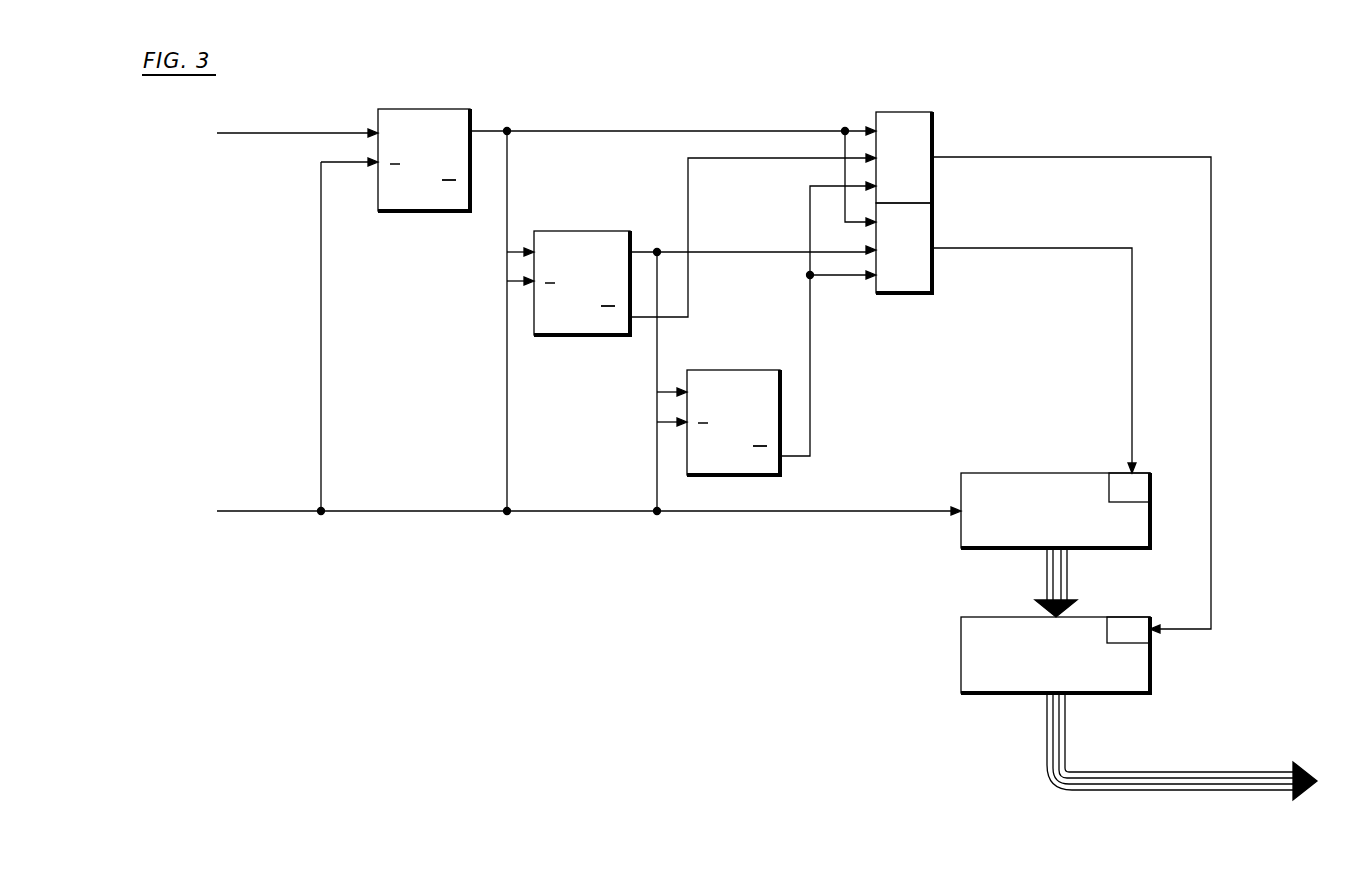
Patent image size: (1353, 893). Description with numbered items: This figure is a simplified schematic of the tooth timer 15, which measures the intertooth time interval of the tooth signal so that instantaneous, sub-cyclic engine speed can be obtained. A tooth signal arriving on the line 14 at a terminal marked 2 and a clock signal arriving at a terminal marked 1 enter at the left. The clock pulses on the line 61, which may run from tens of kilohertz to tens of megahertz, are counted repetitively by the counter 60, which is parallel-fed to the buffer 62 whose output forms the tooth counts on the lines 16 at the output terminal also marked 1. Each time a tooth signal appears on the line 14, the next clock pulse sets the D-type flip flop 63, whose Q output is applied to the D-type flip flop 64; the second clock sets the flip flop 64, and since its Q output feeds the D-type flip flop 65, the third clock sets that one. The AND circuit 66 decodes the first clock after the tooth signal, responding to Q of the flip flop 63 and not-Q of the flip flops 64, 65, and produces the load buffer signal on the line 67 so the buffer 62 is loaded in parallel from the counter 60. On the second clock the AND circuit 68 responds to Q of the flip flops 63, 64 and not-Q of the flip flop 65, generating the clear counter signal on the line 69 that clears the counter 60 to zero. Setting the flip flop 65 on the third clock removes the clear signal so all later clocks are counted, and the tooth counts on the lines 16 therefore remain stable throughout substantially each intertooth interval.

The clock input / tooth count output terminal 1 is at (770, 643).
The tooth signal input terminal 2 is at (201, 130).
The tooth signal line 14 is at (333, 132).
The tooth timer 15 is at (1128, 89).
The tooth count lines 16 is at (1203, 781).
The counter 60 is at (1030, 473).
The clock pulse line 61 is at (830, 510).
The buffer 62 is at (961, 650).
The first D-type flip flop 63 is at (423, 108).
The second D-type flip flop 64 is at (580, 229).
The third D-type flip flop 65 is at (727, 369).
The first AND circuit 66 is at (902, 112).
The load buffer signal line 67 is at (1157, 155).
The second AND circuit 68 is at (905, 290).
The clear counter signal line 69 is at (1132, 343).